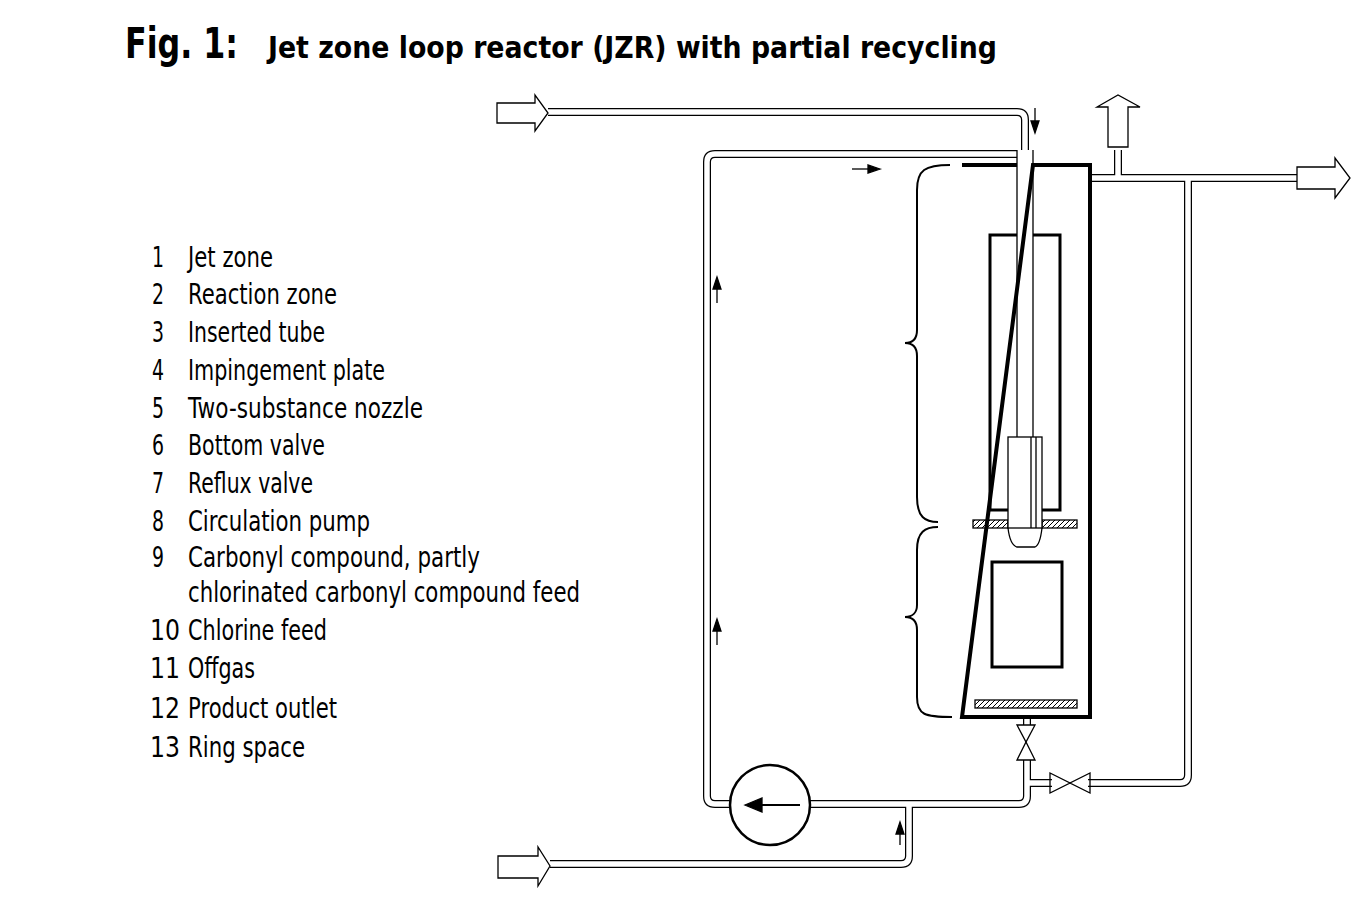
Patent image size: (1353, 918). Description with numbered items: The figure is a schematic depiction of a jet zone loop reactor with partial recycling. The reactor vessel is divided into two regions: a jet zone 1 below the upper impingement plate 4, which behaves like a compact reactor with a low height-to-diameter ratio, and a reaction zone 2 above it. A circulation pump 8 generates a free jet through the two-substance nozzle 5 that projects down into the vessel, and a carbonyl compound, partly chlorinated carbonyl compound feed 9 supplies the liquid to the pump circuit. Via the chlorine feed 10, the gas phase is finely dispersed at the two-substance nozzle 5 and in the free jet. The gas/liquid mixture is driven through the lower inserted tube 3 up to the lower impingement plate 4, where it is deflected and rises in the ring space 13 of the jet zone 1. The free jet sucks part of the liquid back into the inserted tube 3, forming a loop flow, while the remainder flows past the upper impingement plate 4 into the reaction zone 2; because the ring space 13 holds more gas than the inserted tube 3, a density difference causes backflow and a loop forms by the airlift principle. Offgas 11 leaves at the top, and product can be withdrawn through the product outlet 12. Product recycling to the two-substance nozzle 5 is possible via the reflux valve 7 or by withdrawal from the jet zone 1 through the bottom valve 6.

The jet zone 1 is at (920, 622).
The reaction zone 2 is at (918, 343).
The inserted tube 3 is at (1062, 360).
The impingement plate 4 is at (1055, 527).
The two-substance nozzle 5 is at (1025, 468).
The bottom valve 6 is at (1022, 742).
The reflux valve 7 is at (1075, 787).
The circulation pump 8 is at (773, 778).
The carbonyl compound, partly chlorinated carbonyl compound feed 9 is at (515, 858).
The chlorine feed 10 is at (513, 117).
The offgas 11 is at (1125, 122).
The product outlet 12 is at (1322, 185).
The ring space 13 is at (1073, 296).